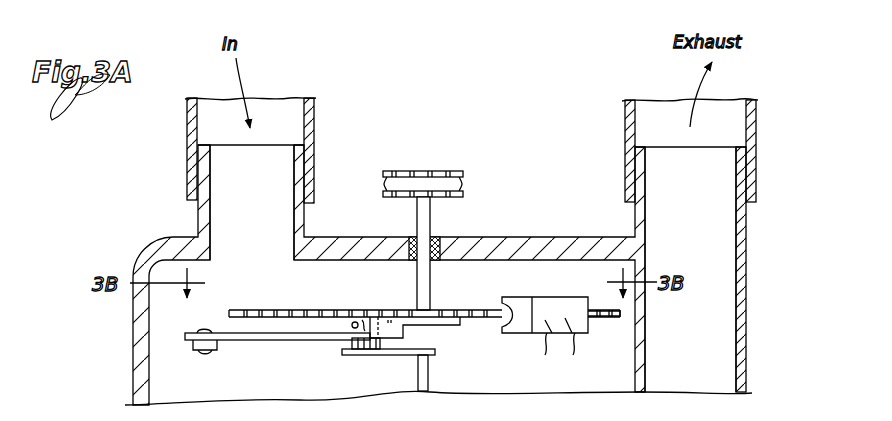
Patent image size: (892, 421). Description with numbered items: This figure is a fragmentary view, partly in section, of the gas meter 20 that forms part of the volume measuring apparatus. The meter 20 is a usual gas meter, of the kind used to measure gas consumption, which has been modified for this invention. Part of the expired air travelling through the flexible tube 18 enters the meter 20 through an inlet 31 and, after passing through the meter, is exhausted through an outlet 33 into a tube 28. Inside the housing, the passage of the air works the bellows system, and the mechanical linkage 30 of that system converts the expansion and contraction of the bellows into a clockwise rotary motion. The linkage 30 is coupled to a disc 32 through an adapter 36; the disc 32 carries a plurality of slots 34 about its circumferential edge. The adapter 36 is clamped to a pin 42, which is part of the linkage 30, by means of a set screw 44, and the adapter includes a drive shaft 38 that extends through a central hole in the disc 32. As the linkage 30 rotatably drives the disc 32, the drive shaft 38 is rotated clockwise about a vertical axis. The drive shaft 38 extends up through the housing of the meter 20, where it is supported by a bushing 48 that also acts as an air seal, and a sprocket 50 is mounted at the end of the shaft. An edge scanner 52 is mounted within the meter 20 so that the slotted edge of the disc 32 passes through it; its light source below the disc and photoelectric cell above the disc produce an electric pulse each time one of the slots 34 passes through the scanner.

The flexible tube 18 is at (187, 132).
The meter 20 is at (428, 130).
The tube 28 is at (758, 126).
The mechanical linkage 30 is at (356, 344).
The inlet 31 is at (262, 195).
The disc 32 is at (612, 324).
The outlet 33 is at (703, 208).
The slots 34 is at (320, 310).
The adapter 36 is at (427, 328).
The drive shaft 38 is at (425, 220).
The pin 42 is at (388, 357).
The set screw 44 is at (352, 324).
The bushing 48 is at (440, 240).
The sprocket 50 is at (448, 171).
The edge scanner 52 is at (548, 300).